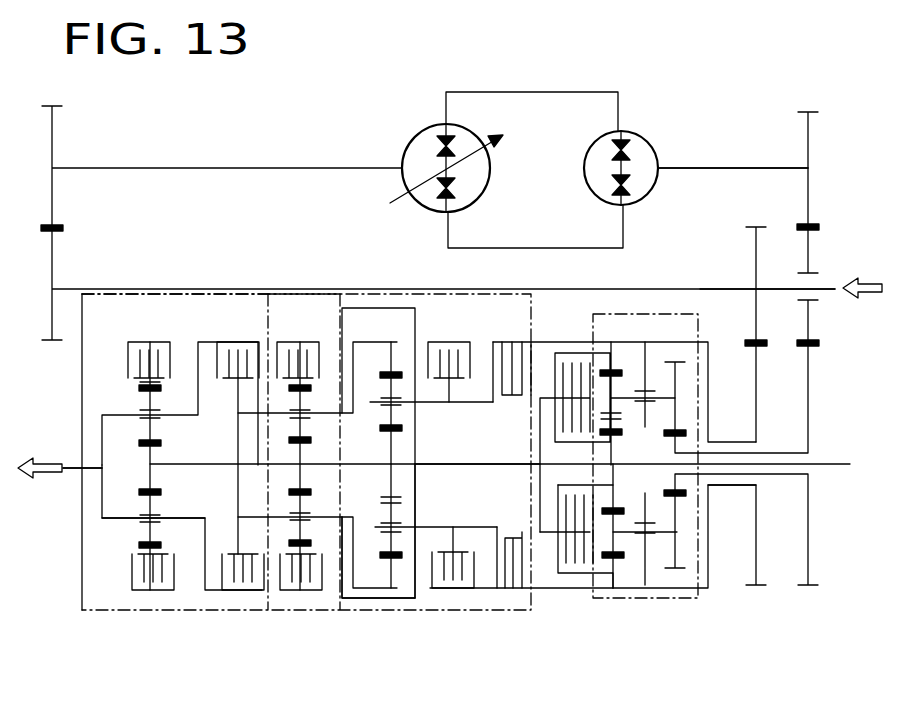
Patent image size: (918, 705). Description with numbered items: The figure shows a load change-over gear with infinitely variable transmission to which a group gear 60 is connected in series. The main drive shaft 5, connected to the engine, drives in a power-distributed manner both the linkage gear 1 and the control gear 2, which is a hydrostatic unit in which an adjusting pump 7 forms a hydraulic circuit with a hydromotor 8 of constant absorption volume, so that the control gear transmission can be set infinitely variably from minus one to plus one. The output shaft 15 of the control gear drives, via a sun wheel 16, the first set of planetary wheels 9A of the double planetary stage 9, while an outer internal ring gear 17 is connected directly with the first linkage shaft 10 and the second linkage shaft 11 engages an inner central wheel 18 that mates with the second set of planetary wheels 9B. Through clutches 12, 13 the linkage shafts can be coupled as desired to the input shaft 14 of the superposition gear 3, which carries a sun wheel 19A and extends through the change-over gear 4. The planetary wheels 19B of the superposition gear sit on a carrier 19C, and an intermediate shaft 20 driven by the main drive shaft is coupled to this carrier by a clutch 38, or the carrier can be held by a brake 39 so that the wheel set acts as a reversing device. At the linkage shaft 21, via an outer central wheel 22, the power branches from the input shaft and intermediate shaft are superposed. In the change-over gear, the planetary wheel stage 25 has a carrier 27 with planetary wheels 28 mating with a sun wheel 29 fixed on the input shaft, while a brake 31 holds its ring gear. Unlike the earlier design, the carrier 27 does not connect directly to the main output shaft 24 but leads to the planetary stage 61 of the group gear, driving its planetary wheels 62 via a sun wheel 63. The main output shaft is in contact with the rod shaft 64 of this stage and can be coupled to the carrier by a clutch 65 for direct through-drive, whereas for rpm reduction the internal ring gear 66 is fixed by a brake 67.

The linkage gear 1 is at (653, 302).
The control gear 2 is at (583, 72).
The superposition gear 3 is at (382, 300).
The change-over gear 4 is at (303, 290).
The main drive shaft 5 is at (830, 288).
The adjusting pump 7 is at (425, 157).
The hydromotor 8 is at (636, 160).
The double planetary stage 9 is at (665, 533).
The first set of planetary wheels 9A is at (613, 402).
The second set of planetary wheels 9B is at (672, 418).
The first linkage shaft 10 is at (563, 378).
The second linkage shaft 11 is at (558, 487).
The clutch 12 is at (558, 373).
The clutch 13 is at (560, 506).
The input shaft 14 is at (462, 470).
The output shaft 15 is at (752, 168).
The sun wheel 16 is at (710, 487).
The outer internal ring gear 17 is at (617, 567).
The inner central wheel 18 is at (613, 432).
The sun wheel 19A is at (393, 453).
The planetary wheels 19B is at (387, 515).
The carrier 19C is at (388, 398).
The intermediate shaft 20 is at (467, 402).
The linkage shaft 21 is at (373, 592).
The outer central wheel 22 is at (407, 590).
The main output shaft 24 is at (90, 472).
The planetary wheel stage 25 is at (301, 608).
The carrier 27 is at (283, 417).
The planetary wheels 28 is at (305, 505).
The sun wheel 29 is at (300, 478).
The brake 31 is at (280, 578).
The clutch 38 is at (515, 588).
The brake 39 is at (460, 587).
The group gear 60 is at (193, 290).
The planetary stage 61 is at (143, 607).
The planetary wheels 62 is at (137, 413).
The sun wheel 63 is at (152, 458).
The rod shaft 64 is at (130, 520).
The clutch 65 is at (240, 348).
The internal ring gear 66 is at (162, 385).
The brake 67 is at (152, 350).